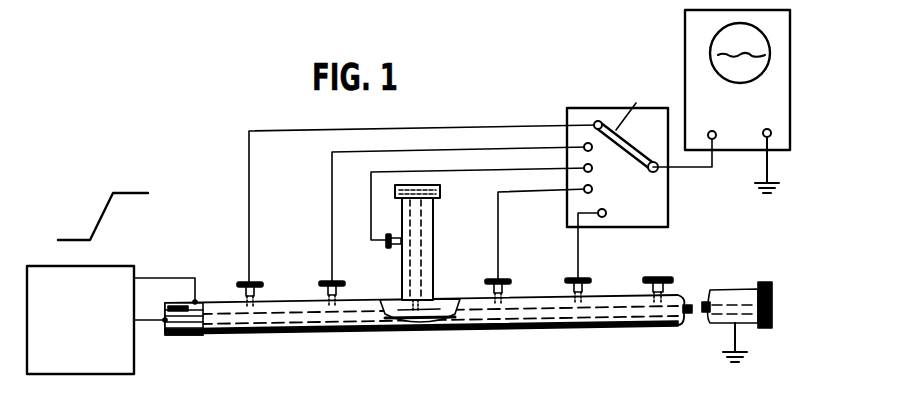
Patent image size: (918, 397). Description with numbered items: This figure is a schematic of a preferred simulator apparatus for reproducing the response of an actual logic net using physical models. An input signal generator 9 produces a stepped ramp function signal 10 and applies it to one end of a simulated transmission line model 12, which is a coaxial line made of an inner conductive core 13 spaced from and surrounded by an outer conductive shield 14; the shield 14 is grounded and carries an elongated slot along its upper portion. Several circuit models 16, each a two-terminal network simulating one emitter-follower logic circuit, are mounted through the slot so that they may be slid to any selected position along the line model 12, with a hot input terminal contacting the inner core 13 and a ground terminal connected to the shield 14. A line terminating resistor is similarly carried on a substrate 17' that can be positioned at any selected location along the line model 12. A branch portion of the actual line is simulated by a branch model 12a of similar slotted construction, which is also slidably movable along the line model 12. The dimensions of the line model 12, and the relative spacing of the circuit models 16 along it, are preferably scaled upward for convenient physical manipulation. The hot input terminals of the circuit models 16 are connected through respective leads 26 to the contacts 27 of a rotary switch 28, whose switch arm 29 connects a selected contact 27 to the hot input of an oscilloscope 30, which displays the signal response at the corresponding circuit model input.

The input signal generator 9 is at (130, 271).
The stepped ramp function signal 10 is at (101, 216).
The transmission line model 12 is at (357, 341).
The branch model 12a is at (433, 240).
The inner conductive core 13 is at (166, 333).
The outer conductive shield 14 is at (183, 337).
The circuit model 16 is at (322, 283).
The substrate 17' is at (667, 272).
The leads 26 is at (330, 200).
The contacts 27 is at (603, 209).
The rotary switch 28 is at (642, 153).
The switch arm 29 is at (644, 157).
The oscilloscope 30 is at (787, 153).